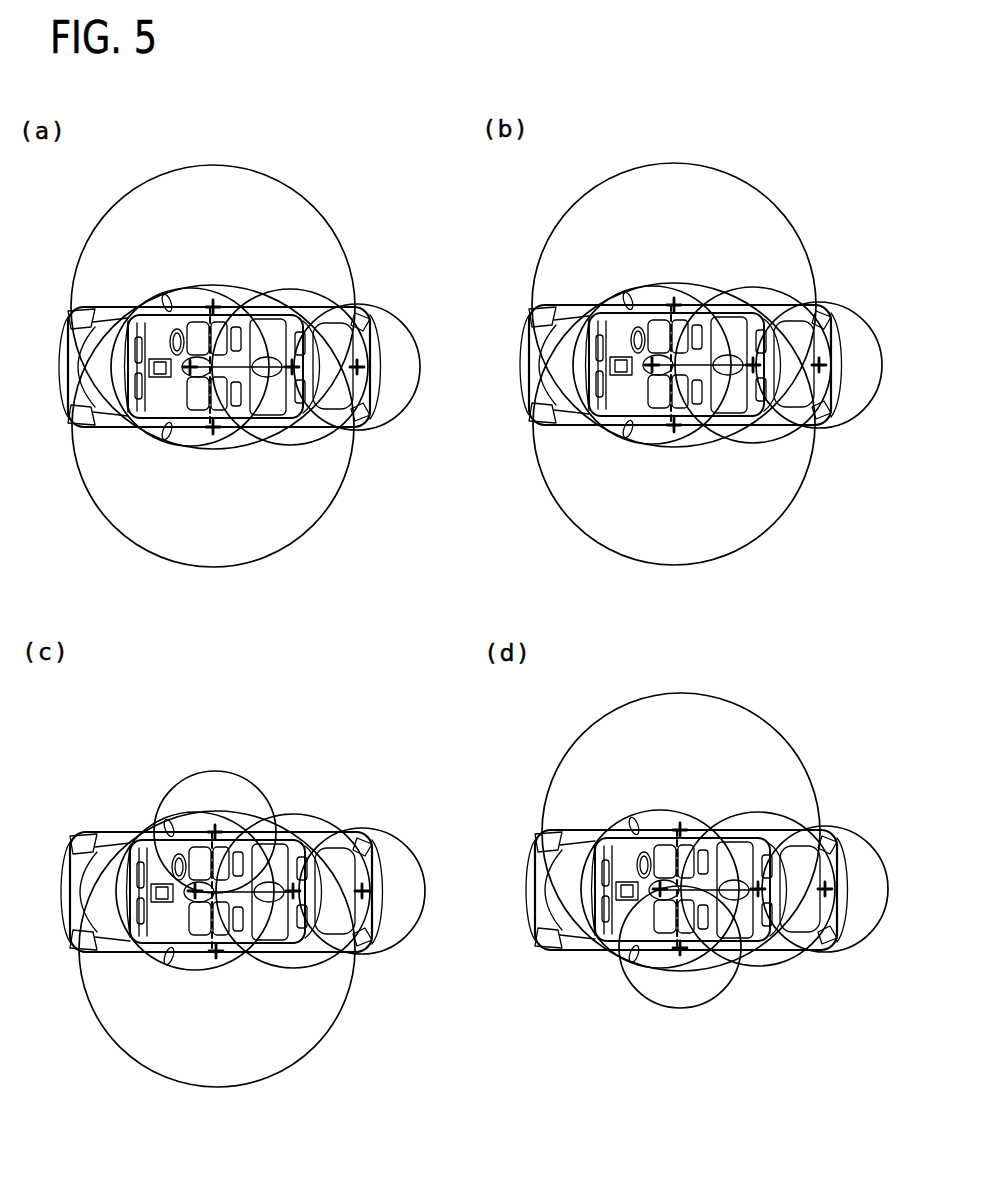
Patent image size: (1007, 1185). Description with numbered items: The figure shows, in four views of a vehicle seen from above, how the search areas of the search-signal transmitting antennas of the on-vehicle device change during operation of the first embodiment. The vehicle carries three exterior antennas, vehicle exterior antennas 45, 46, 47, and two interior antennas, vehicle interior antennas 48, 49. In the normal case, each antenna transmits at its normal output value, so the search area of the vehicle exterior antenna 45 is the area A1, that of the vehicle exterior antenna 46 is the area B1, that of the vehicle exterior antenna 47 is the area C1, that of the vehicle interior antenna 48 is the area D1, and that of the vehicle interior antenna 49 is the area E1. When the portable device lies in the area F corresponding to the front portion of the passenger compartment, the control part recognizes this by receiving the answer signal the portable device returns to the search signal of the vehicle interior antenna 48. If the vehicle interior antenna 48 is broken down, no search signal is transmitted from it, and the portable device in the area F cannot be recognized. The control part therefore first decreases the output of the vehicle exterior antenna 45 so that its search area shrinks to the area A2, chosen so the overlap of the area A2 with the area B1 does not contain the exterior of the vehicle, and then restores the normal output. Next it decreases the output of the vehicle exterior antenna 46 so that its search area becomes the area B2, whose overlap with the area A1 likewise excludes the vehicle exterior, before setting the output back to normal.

The vehicle exterior antenna 45 is at (213, 307).
The vehicle exterior antenna 46 is at (212, 430).
The vehicle exterior antenna 47 is at (358, 369).
The vehicle interior antenna 48 is at (192, 335).
The vehicle interior antenna 49 is at (283, 337).
The search area A1 is at (298, 191).
The search area A2 is at (240, 775).
The search area B1 is at (327, 510).
The search area B2 is at (660, 1007).
The search area C1 is at (403, 318).
The search area D1 is at (158, 443).
The search area E1 is at (258, 444).
The area F is at (77, 432).